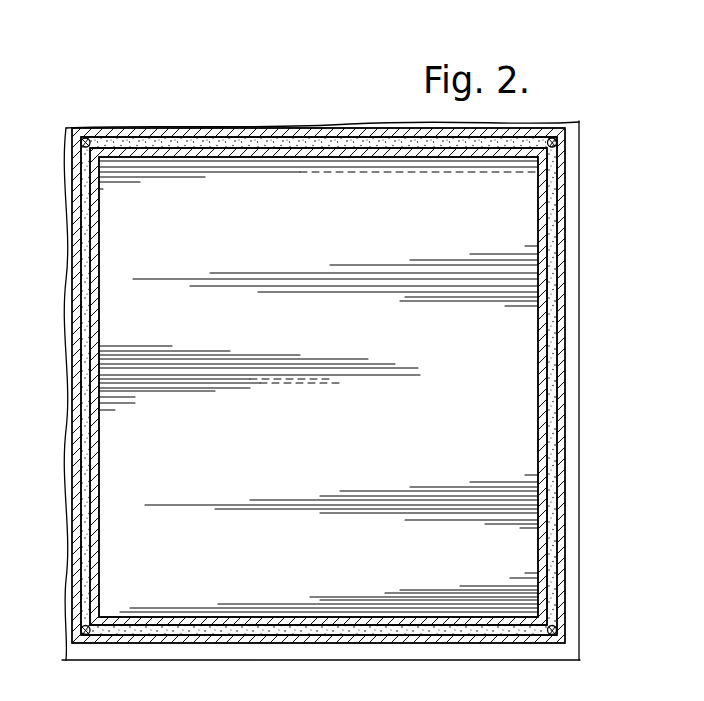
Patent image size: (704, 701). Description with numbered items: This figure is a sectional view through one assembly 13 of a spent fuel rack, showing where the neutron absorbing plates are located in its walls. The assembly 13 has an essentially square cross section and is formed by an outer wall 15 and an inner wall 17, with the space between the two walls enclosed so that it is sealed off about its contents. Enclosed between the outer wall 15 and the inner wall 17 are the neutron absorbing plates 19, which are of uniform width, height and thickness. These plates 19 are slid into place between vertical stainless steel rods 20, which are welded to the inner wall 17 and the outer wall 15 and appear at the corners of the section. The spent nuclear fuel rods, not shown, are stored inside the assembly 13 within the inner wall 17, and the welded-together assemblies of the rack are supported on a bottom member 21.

The assembly 13 is at (190, 118).
The outer wall 15 is at (566, 314).
The inner wall 17 is at (538, 371).
The neutron absorbing plate 19 is at (287, 140).
The vertical stainless steel rod 20 is at (85, 143).
The bottom member 21 is at (579, 213).